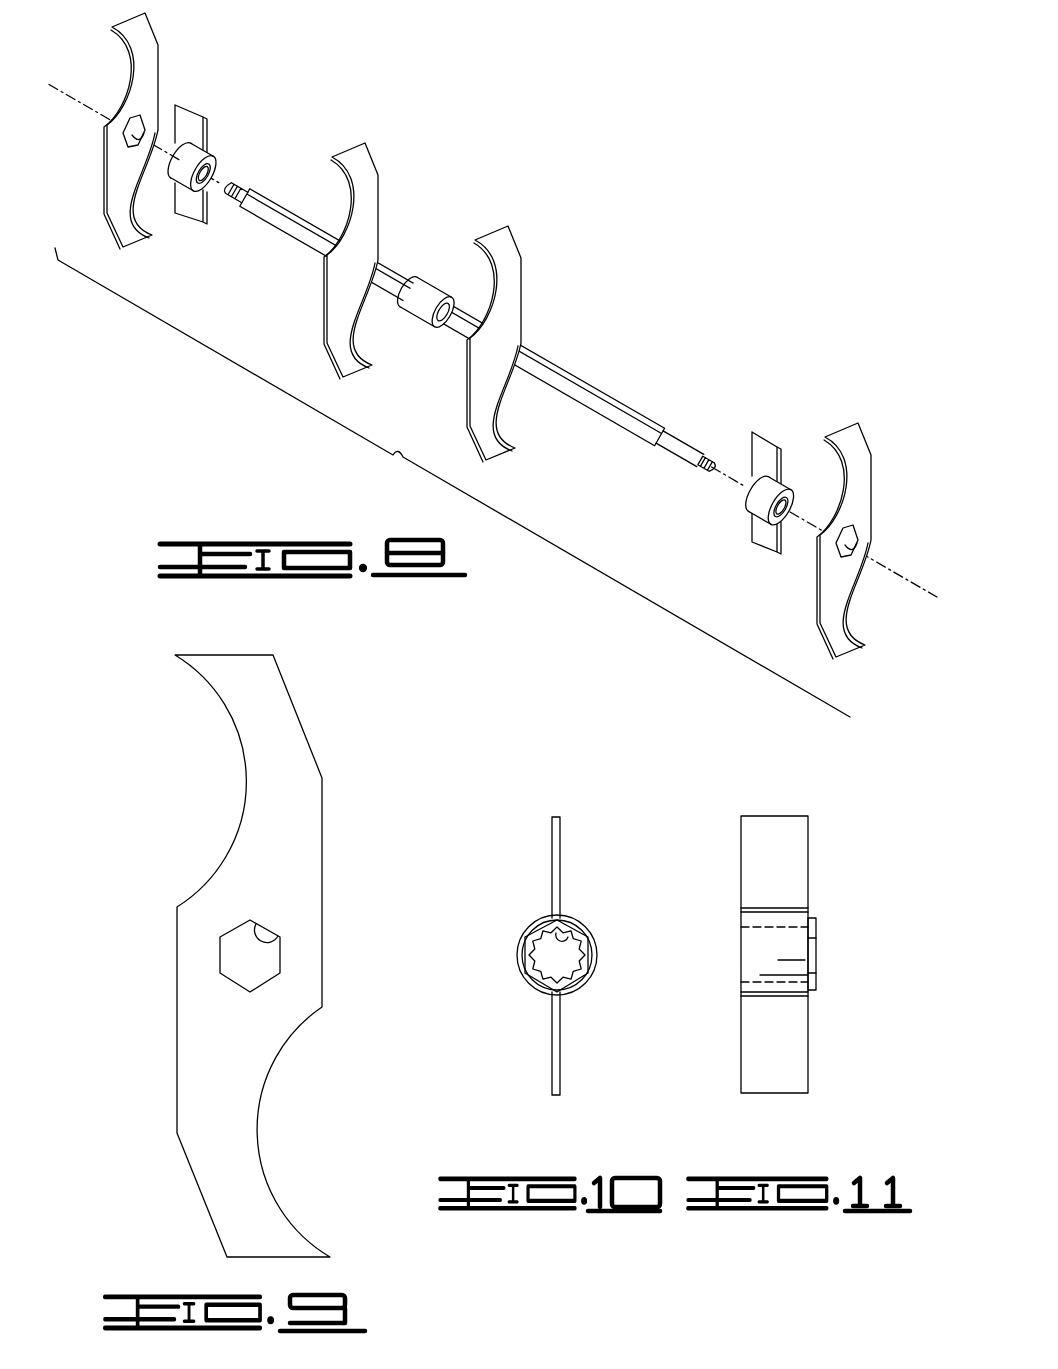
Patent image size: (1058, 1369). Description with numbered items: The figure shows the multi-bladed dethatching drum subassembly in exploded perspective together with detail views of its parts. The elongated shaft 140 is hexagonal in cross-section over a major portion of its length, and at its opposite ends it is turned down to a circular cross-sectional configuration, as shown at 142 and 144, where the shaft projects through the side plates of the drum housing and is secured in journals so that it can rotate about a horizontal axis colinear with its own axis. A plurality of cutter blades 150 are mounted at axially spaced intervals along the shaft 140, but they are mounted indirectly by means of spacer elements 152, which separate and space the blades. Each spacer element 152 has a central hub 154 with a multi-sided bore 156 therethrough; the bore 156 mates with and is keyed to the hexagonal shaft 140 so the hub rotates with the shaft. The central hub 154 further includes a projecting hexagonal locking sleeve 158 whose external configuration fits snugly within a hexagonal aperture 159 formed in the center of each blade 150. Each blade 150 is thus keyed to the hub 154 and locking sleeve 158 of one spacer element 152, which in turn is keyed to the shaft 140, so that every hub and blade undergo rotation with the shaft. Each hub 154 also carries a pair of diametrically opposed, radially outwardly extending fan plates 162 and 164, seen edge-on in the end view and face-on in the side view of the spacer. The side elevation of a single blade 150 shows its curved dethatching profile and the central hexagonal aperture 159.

In FIG. 8, the elongated shaft 140 is at (580, 383).
In FIG. 8, the turned-down circular end of shaft 142 is at (253, 192).
In FIG. 8, the turned-down circular end of shaft 144 is at (685, 447).
In FIG. 8, the cutter blade 150 is at (118, 193).
In FIG. 9, the cutter blade 150 is at (277, 723).
In FIG. 8, the spacer element 152 is at (496, 316).
In FIG. 10, the spacer element 152 is at (549, 956).
In FIG. 11, the spacer element 152 is at (782, 954).
In FIG. 8, the central hub 154 is at (755, 488).
In FIG. 10, the central hub 154 is at (580, 987).
In FIG. 11, the central hub 154 is at (752, 953).
In FIG. 10, the bore 156 is at (562, 937).
In FIG. 8, the hexagonal locking sleeve 158 is at (786, 490).
In FIG. 10, the hexagonal locking sleeve 158 is at (555, 918).
In FIG. 11, the hexagonal locking sleeve 158 is at (812, 918).
In FIG. 8, the hexagonal aperture 159 is at (860, 538).
In FIG. 9, the hexagonal aperture 159 is at (277, 937).
In FIG. 8, the fan plate 162 is at (190, 207).
In FIG. 10, the fan plate 162 is at (555, 1072).
In FIG. 11, the fan plate 162 is at (774, 1042).
In FIG. 8, the fan plate 164 is at (188, 116).
In FIG. 10, the fan plate 164 is at (555, 826).
In FIG. 11, the fan plate 164 is at (793, 853).